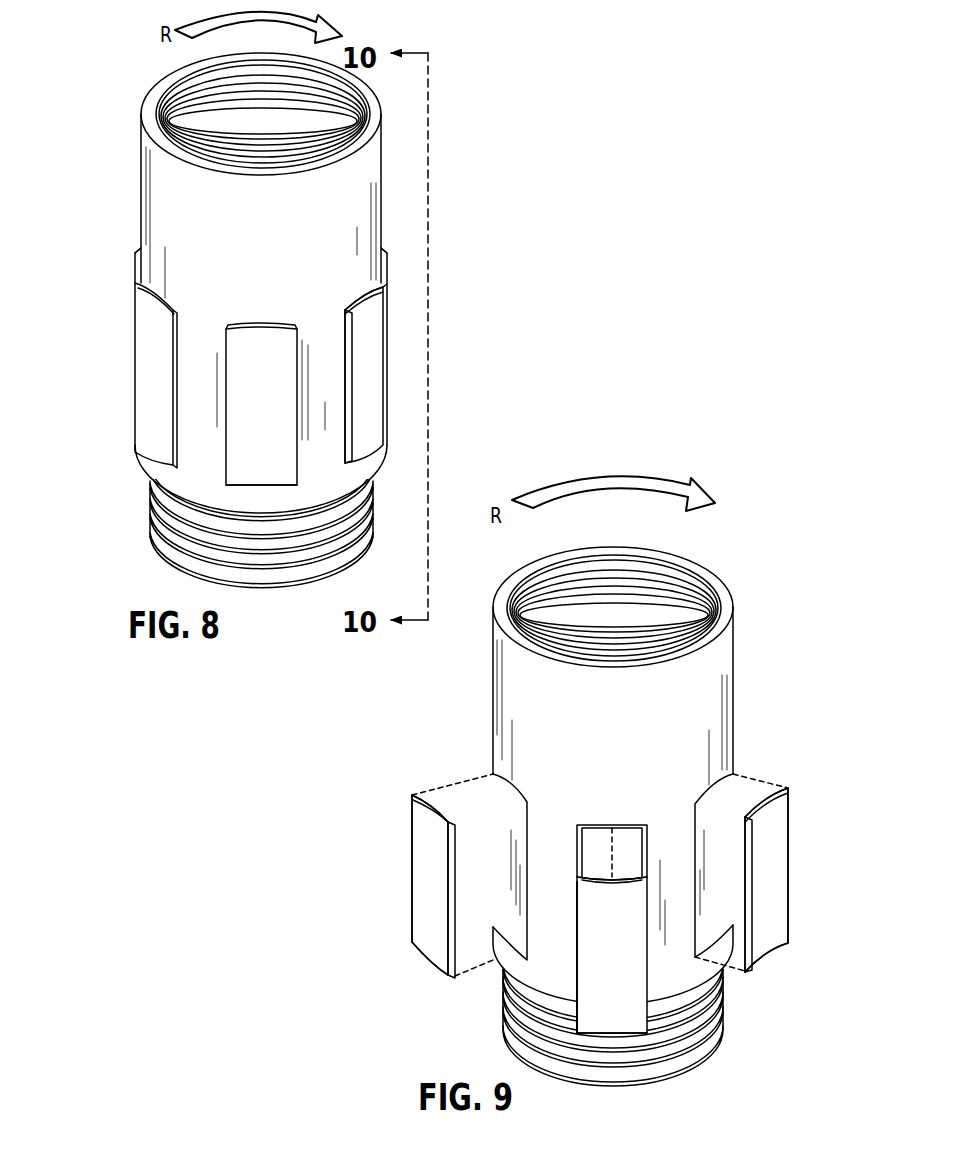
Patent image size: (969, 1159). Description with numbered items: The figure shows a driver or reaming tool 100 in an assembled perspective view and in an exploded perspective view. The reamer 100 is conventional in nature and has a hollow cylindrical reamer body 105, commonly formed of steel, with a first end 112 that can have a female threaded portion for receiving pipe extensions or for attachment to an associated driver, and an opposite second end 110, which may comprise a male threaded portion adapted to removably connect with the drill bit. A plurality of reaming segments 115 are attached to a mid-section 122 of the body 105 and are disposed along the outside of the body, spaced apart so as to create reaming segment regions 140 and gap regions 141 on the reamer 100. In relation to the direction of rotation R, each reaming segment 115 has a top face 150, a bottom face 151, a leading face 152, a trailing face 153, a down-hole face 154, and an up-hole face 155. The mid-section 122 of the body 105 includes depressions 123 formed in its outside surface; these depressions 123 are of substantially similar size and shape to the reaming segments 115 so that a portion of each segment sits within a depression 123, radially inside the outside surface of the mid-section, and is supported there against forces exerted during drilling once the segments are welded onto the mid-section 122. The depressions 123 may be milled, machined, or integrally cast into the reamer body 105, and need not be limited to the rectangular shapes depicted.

In FIG. 8, the reaming tool 100 is at (95, 265).
In FIG. 9, the reaming tool 100 is at (458, 717).
In FIG. 8, the reamer body 105 is at (150, 177).
In FIG. 9, the reamer body 105 is at (710, 680).
In FIG. 8, the second end 110 is at (135, 522).
In FIG. 9, the second end 110 is at (725, 1035).
In FIG. 8, the first end 112 is at (137, 80).
In FIG. 9, the first end 112 is at (745, 603).
In FIG. 8, the reaming segments 115 is at (272, 345).
In FIG. 9, the reaming segments 115 is at (418, 874).
In FIG. 8, the mid-section 122 is at (118, 362).
In FIG. 9, the depressions 123 is at (517, 807).
In FIG. 8, the reaming segment regions 140 is at (247, 318).
In FIG. 8, the gap regions 141 is at (322, 330).
In FIG. 8, the top face 150 is at (380, 320).
In FIG. 9, the top face 150 is at (418, 826).
In FIG. 9, the bottom face 151 is at (440, 806).
In FIG. 8, the leading face 152 is at (347, 348).
In FIG. 9, the leading face 152 is at (750, 967).
In FIG. 8, the trailing face 153 is at (178, 435).
In FIG. 9, the trailing face 153 is at (447, 908).
In FIG. 8, the down-hole face 154 is at (277, 491).
In FIG. 9, the down-hole face 154 is at (430, 968).
In FIG. 8, the up-hole face 155 is at (380, 288).
In FIG. 9, the up-hole face 155 is at (435, 807).